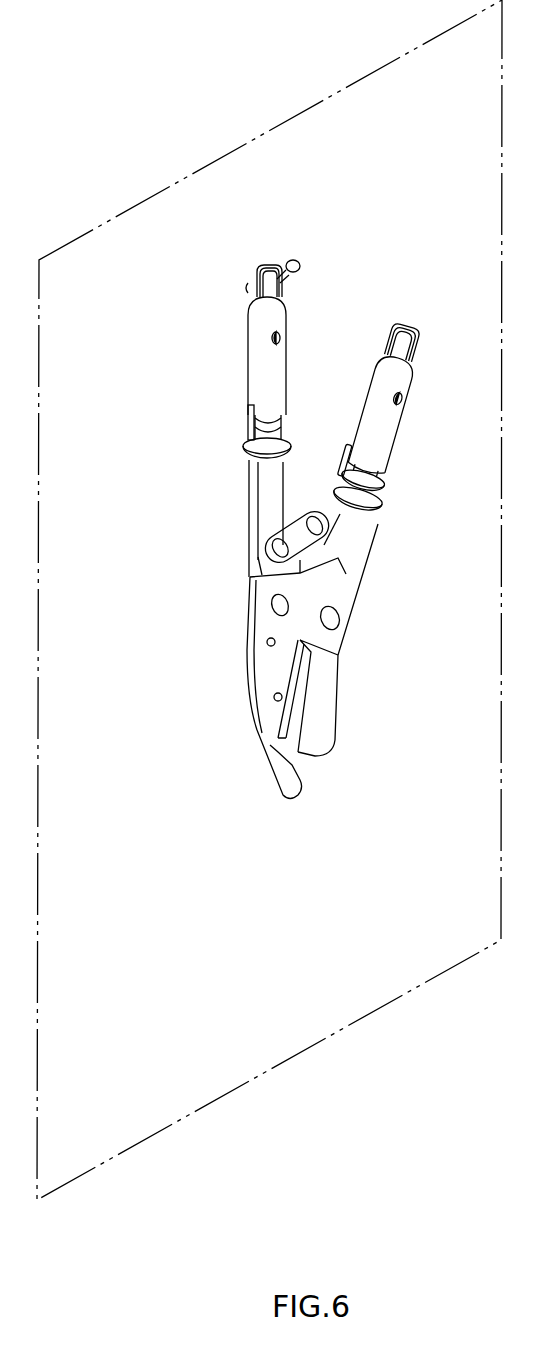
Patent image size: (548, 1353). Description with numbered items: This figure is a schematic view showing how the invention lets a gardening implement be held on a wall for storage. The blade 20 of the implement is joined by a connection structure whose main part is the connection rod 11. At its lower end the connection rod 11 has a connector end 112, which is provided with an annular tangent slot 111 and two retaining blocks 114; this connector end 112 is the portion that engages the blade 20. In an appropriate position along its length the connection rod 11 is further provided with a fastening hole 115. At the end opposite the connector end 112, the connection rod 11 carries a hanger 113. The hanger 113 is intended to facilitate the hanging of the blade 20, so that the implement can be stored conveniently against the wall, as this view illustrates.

The connection rod 11 is at (390, 433).
The annular tangent slot 111 is at (383, 480).
The connector end 112 is at (381, 522).
The hanger 113 is at (398, 322).
The retaining block 114 is at (352, 463).
The fastening hole 115 is at (405, 399).
The blade 20 is at (348, 581).